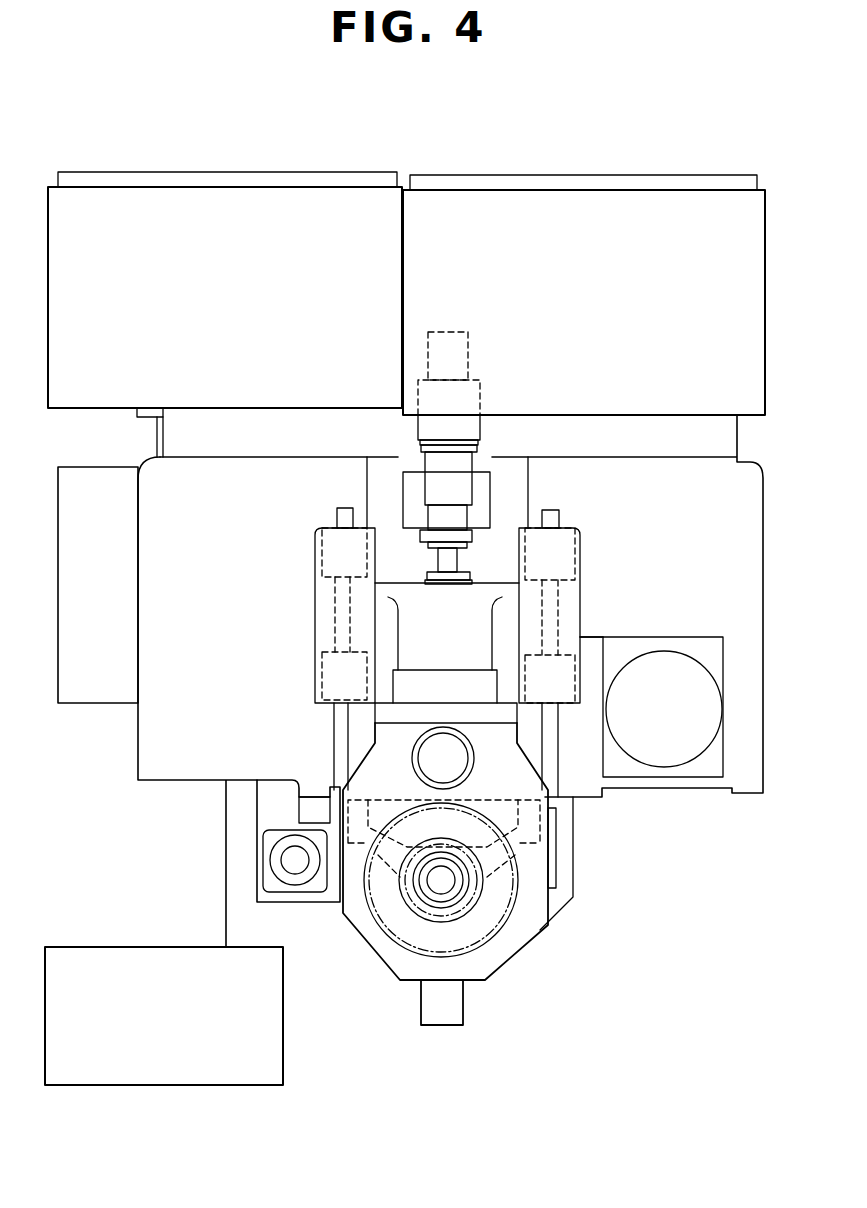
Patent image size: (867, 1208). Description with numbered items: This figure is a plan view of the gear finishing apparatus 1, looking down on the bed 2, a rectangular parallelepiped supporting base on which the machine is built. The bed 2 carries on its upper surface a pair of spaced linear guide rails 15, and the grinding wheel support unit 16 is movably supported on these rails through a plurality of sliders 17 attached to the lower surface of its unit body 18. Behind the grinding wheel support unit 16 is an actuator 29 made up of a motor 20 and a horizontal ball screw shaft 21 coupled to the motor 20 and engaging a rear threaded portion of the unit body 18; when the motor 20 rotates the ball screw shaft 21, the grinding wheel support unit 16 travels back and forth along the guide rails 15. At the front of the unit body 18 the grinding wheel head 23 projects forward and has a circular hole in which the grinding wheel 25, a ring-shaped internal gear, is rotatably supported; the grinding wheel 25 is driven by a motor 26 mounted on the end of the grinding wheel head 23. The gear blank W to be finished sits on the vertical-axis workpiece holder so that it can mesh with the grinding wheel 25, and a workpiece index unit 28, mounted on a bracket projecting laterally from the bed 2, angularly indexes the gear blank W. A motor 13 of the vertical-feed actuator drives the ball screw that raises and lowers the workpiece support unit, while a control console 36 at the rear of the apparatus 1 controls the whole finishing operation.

The gear finishing apparatus 1 is at (684, 156).
The bed 2 is at (752, 560).
The motor 13 is at (297, 866).
The linear guide rails 15 is at (566, 518).
The grinding wheel support unit 16 is at (587, 599).
The sliders 17 is at (580, 562).
The unit body 18 is at (568, 637).
The motor 20 is at (481, 428).
The horizontal ball screw shaft 21 is at (458, 562).
The grinding wheel head 23 is at (533, 878).
The grinding wheel 25 is at (505, 927).
The motor 26 is at (430, 760).
The workpiece index unit 28 is at (450, 1005).
The actuator 29 is at (571, 393).
The control console 36 is at (252, 200).
The gear blank W is at (415, 915).